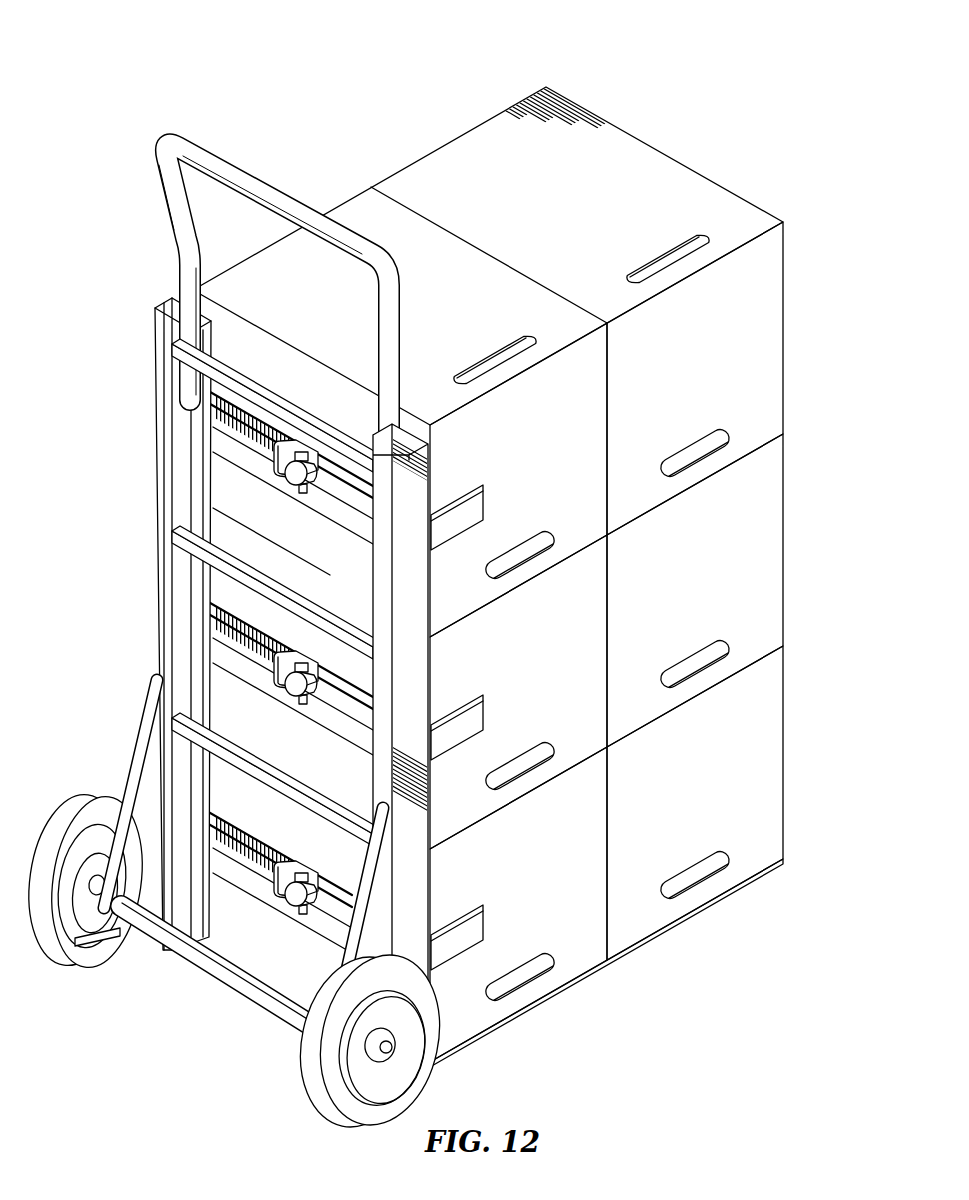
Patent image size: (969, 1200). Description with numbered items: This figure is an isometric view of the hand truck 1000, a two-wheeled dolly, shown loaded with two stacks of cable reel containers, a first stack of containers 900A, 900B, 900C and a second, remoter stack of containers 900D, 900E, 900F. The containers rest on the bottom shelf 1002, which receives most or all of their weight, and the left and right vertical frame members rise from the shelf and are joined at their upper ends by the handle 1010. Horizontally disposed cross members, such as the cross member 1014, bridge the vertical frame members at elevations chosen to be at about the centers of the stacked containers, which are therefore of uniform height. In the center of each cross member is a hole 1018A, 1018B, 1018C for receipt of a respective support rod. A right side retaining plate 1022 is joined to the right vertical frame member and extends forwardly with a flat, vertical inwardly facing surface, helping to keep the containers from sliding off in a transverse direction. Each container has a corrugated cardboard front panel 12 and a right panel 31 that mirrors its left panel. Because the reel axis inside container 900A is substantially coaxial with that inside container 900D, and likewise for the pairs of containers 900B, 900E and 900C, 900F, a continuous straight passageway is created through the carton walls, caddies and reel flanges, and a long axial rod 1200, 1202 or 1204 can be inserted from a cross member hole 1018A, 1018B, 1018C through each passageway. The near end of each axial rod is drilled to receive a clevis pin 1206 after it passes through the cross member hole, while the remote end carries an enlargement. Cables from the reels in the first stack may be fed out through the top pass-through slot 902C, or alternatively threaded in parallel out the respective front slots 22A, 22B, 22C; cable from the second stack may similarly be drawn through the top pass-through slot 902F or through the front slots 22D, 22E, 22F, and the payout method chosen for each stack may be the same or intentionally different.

The hand truck 1000 is at (170, 64).
The handle 1010 is at (267, 178).
The right panel 31 is at (230, 453).
The clevis pin 1206 is at (327, 450).
The axial rod 1204 is at (287, 482).
The axial rod 1202 is at (287, 694).
The hole 1018A is at (312, 905).
The hole 1018B is at (328, 698).
The hole 1018C is at (325, 478).
The right side retaining plate 1022 is at (482, 507).
The cross member 1014 is at (482, 718).
The axial rod 1200 is at (243, 965).
The bottom shelf 1002 is at (647, 942).
The container 900A is at (592, 843).
The container 900B is at (592, 633).
The container 900C is at (592, 415).
The container 900D is at (767, 764).
The container 900E is at (767, 554).
The container 900F is at (767, 343).
The top pass-through slot 902C is at (495, 363).
The top pass-through slot 902F is at (667, 262).
The front slot 22A is at (517, 979).
The front slot 22B is at (513, 773).
The front slot 22C is at (513, 562).
The front slot 22D is at (688, 882).
The front slot 22E is at (687, 671).
The front slot 22F is at (687, 460).
The front panel 12 is at (707, 374).